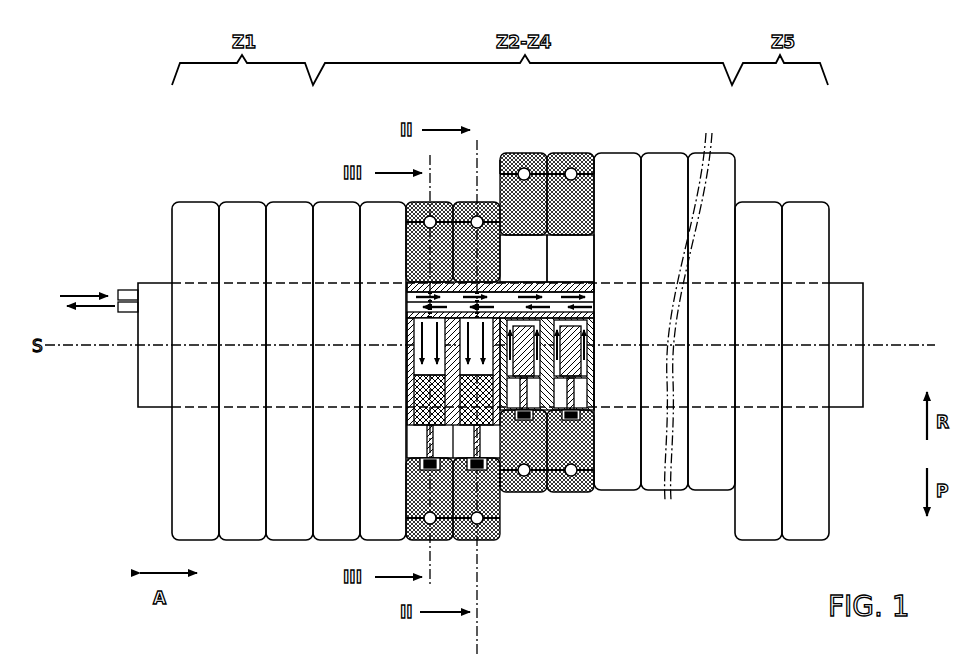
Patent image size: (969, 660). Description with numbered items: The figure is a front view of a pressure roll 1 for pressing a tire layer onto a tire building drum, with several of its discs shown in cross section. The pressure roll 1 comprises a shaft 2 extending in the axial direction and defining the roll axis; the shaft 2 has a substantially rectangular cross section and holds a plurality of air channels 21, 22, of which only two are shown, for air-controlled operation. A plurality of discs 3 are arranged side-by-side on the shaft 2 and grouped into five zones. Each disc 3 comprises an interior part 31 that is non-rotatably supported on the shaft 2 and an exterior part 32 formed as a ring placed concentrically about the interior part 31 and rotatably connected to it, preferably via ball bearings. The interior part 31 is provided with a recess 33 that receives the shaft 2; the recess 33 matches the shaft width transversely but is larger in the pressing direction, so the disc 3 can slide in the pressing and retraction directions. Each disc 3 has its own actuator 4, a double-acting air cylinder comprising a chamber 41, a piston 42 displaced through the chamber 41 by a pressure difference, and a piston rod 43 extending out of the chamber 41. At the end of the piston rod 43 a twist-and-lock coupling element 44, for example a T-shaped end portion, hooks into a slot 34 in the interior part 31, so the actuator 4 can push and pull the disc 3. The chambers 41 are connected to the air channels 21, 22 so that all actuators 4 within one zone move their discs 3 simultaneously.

The pressure roll 1 is at (100, 82).
The shaft 2 is at (140, 376).
The air channel 21 is at (128, 290).
The air channel 22 is at (128, 312).
The disc 3 is at (447, 541).
The interior part 31 is at (596, 213).
The exterior part 32 is at (585, 153).
The recess 33 is at (584, 268).
The mounting element (slot) 34 is at (420, 492).
The actuator 4 is at (463, 398).
The chamber 41 is at (414, 362).
The piston 42 is at (415, 413).
The piston rod 43 is at (427, 437).
The coupling element 44 is at (424, 465).